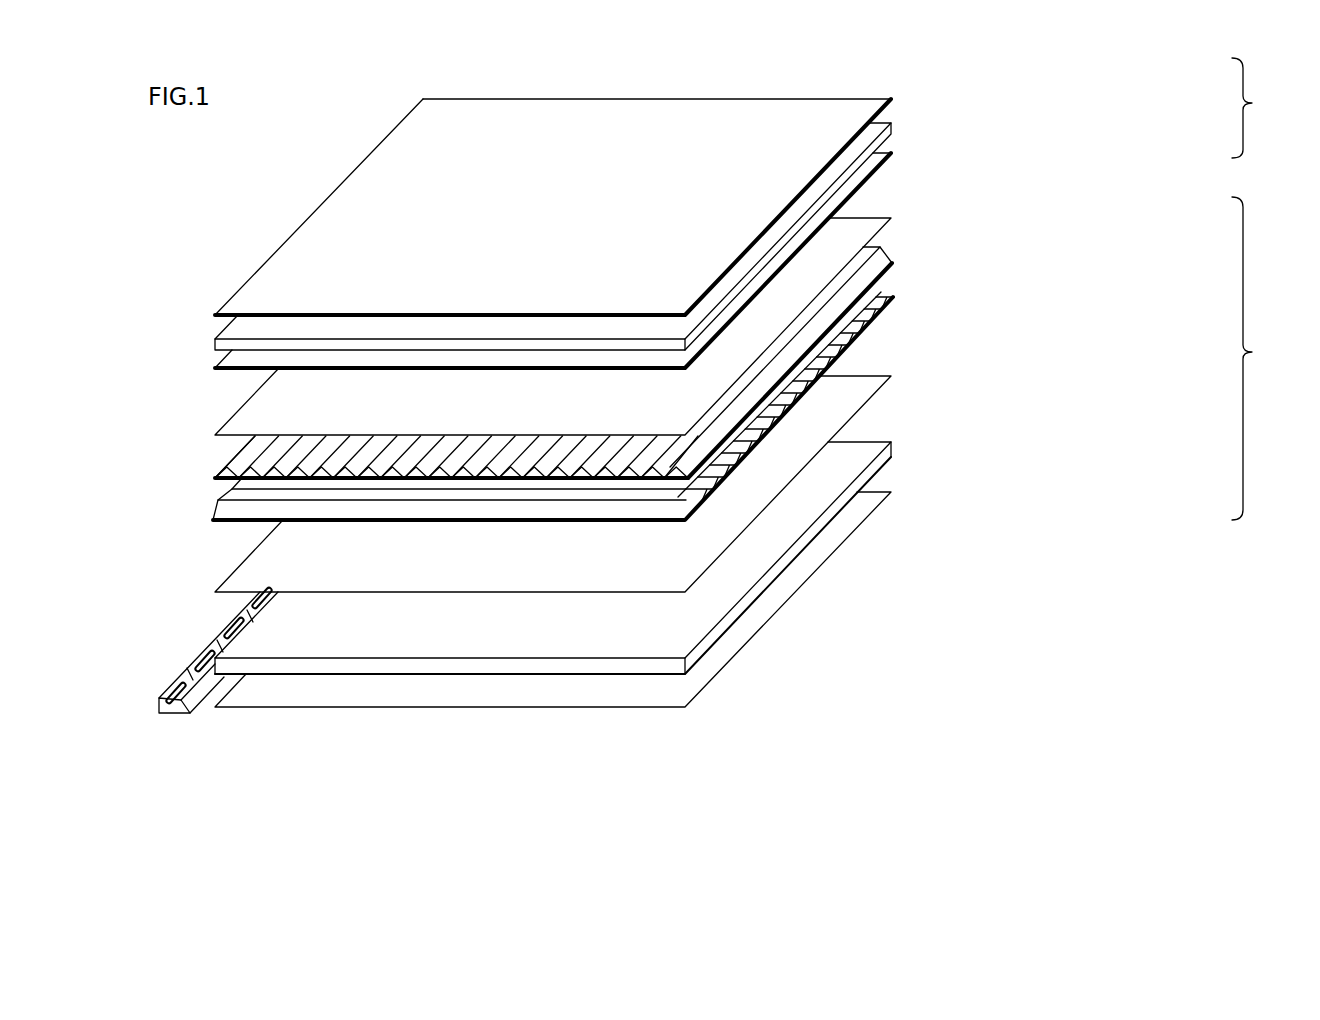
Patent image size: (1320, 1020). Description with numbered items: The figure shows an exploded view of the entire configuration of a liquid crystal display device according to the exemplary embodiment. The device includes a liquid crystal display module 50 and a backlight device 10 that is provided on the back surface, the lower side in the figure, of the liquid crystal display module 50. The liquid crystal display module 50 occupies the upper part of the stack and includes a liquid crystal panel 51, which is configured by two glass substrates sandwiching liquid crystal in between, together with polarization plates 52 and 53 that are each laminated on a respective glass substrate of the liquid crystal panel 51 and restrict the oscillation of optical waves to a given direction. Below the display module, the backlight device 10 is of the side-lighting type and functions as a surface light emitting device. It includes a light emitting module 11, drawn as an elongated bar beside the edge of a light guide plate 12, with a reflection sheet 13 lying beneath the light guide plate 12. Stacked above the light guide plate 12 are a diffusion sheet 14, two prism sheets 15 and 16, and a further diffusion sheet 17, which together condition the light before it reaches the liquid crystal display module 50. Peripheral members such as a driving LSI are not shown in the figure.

The liquid crystal display module 50 is at (1265, 108).
The polarization plate 53 is at (891, 97).
The liquid crystal panel 51 is at (891, 123).
The polarization plate 52 is at (891, 153).
The backlight device 10 is at (1265, 358).
The diffusion sheet 17 is at (891, 218).
The prism sheet 16 is at (891, 263).
The prism sheet 15 is at (893, 298).
The diffusion sheet 14 is at (891, 376).
The light guide plate 12 is at (891, 442).
The reflection sheet 13 is at (891, 492).
The light emitting module 11 is at (176, 724).